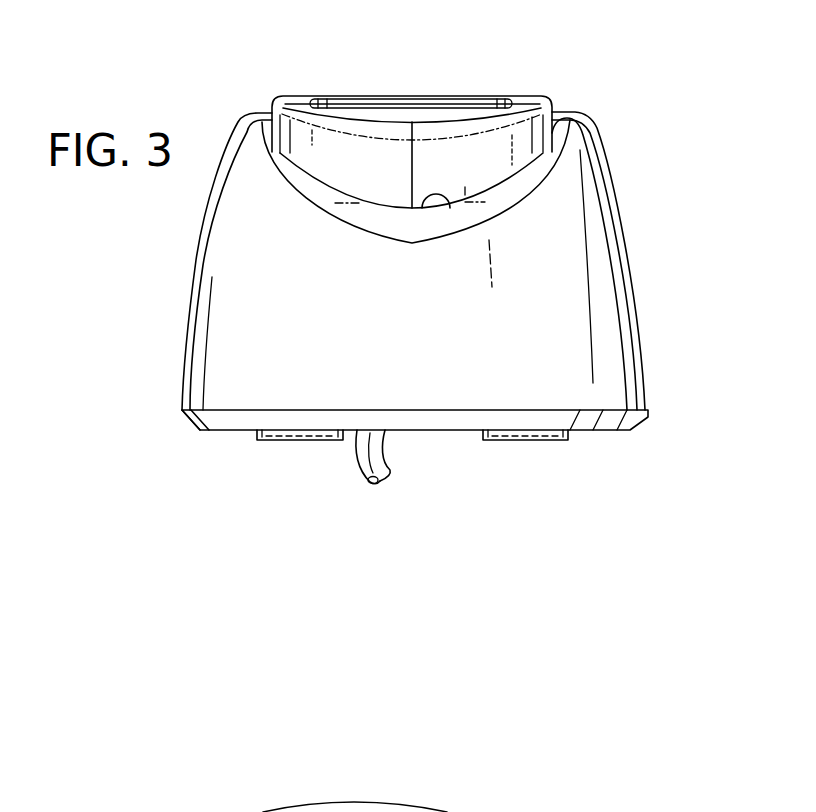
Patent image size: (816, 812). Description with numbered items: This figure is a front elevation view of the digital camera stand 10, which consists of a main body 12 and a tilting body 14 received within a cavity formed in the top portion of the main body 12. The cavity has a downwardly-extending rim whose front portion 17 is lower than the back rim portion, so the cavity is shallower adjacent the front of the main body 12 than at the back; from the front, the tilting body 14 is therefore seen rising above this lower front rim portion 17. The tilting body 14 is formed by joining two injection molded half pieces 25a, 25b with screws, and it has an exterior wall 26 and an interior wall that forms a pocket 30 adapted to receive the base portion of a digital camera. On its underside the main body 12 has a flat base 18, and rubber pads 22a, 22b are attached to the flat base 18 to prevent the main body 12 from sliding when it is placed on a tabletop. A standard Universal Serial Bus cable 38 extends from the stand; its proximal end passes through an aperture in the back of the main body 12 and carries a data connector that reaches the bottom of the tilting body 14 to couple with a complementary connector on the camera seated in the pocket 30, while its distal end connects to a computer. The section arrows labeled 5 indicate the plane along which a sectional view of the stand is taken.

The section line 5- 5 is at (410, 80).
The digital camera stand 10 is at (668, 191).
The main body 12 is at (646, 330).
The tilting body 14 is at (556, 93).
The front portion of the rim 17 is at (447, 197).
The flat base 18 is at (230, 432).
The rubber pad 22a is at (288, 442).
The rubber pad 22b is at (533, 442).
The injection molded half piece 25a is at (487, 165).
The injection molded half piece 25b is at (307, 165).
The exterior wall 26 is at (379, 178).
The pocket 30 is at (438, 117).
The USB cable 38 is at (393, 448).